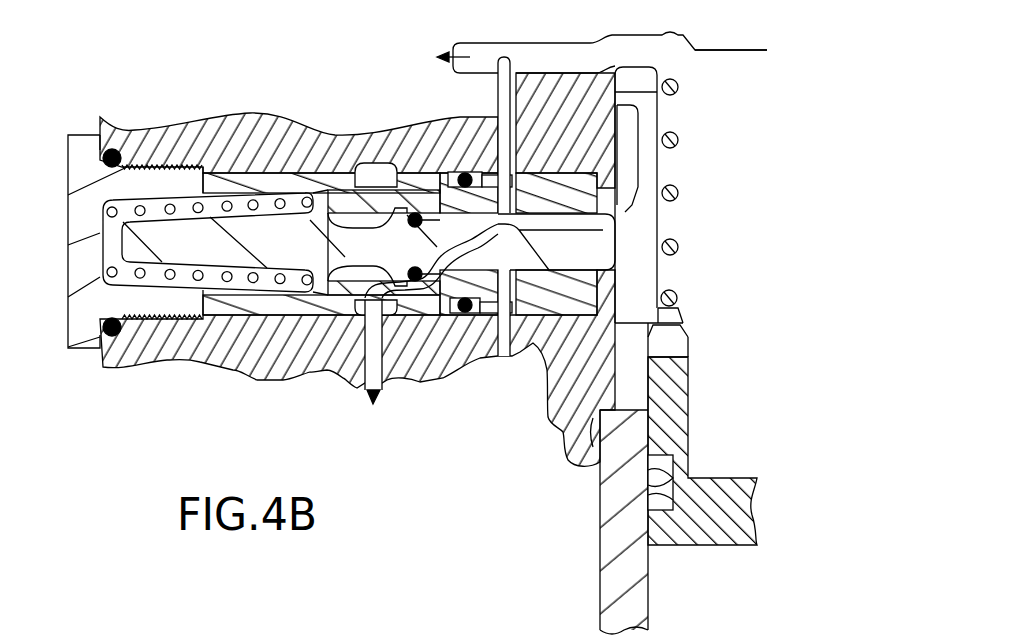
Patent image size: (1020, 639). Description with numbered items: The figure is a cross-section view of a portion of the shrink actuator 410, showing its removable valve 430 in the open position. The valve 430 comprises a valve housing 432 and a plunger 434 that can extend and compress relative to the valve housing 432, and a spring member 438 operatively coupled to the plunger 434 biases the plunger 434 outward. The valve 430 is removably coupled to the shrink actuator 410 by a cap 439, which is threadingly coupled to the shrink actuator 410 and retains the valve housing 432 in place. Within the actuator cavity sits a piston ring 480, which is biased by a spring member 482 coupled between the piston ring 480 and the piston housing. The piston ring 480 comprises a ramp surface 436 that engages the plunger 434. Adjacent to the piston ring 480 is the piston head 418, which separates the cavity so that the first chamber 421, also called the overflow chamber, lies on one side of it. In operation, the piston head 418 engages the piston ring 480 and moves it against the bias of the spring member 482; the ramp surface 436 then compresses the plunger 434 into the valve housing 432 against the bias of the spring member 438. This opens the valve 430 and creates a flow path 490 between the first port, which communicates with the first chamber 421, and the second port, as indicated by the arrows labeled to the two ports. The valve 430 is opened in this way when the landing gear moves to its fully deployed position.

The shrink actuator 410 is at (776, 79).
The piston head 418 is at (753, 497).
The first chamber 421 is at (753, 137).
The valve 430 is at (417, 302).
The valve housing 432 is at (248, 183).
The plunger 434 is at (593, 243).
The ramp surface 436 is at (658, 297).
The spring member 438 is at (227, 283).
The cap 439 is at (82, 150).
The piston ring 480 is at (658, 277).
The spring member 482 is at (678, 195).
The flow path 490 is at (481, 43).